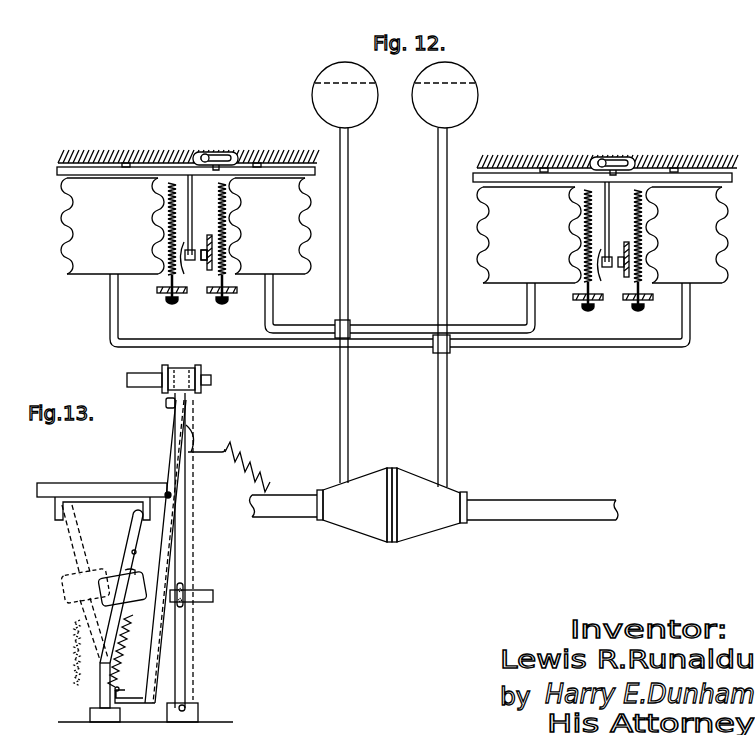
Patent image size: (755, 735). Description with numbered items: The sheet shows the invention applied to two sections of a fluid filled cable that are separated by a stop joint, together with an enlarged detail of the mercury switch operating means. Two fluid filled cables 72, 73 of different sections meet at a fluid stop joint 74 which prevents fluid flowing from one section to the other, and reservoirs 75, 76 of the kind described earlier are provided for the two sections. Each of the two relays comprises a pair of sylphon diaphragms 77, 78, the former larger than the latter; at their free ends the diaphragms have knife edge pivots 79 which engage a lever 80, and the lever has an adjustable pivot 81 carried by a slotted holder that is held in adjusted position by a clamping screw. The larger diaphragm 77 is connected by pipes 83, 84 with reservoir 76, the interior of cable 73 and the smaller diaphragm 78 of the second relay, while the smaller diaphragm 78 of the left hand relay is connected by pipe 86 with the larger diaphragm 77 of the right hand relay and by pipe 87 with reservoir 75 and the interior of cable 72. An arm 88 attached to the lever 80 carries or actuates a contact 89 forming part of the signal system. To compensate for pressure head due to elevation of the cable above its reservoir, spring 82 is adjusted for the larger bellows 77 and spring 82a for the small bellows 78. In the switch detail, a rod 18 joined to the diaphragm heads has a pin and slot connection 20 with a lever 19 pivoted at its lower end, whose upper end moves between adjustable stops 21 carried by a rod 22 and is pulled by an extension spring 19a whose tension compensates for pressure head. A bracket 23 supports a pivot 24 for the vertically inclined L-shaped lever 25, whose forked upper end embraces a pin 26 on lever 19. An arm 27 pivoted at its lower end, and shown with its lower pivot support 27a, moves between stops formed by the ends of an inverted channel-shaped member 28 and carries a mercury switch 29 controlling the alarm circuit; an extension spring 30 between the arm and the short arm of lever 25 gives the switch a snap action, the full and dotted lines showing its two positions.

In FIG. 12, the fluid filled cable 72 is at (298, 520).
In FIG. 12, the fluid filled cable 73 is at (530, 502).
In FIG. 12, the fluid stop joint 74 is at (415, 535).
In FIG. 12, the reservoir 75 is at (324, 76).
In FIG. 12, the reservoir 76 is at (469, 78).
In FIG. 12, the sylphon diaphragm 77 is at (321, 230).
In FIG. 12, the sylphon diaphragm 78 is at (478, 230).
In FIG. 12, the knife edge pivots 79 is at (98, 167).
In FIG. 12, the lever 80 is at (172, 184).
In FIG. 12, the adjustable pivot 81 is at (235, 164).
In FIG. 12, the spring 82 is at (157, 288).
In FIG. 12, the spring 82a is at (222, 287).
In FIG. 12, the pipe 83 is at (638, 347).
In FIG. 12, the pipe 84 is at (438, 408).
In FIG. 12, the pipe 86 is at (298, 325).
In FIG. 12, the pipe 87 is at (348, 292).
In FIG. 12, the arm 88 is at (190, 190).
In FIG. 12, the contact 89 is at (204, 251).
In FIG. 13, the rod 18 is at (203, 590).
In FIG. 13, the lever 19 is at (187, 684).
In FIG. 13, the extension spring 19a is at (255, 448).
In FIG. 13, the pin and slot connection 20 is at (183, 603).
In FIG. 13, the adjustable stops 21 is at (170, 370).
In FIG. 13, the rod 22 is at (149, 373).
In FIG. 13, the bracket 23 is at (98, 483).
In FIG. 13, the pivot 24 is at (165, 493).
In FIG. 13, the L-shaped lever 25 is at (152, 645).
In FIG. 13, the pin 26 is at (165, 407).
In FIG. 13, the arm 27 is at (131, 540).
In FIG. 13, the post 27a is at (98, 665).
In FIG. 13, the inverted channel-shaped member 28 is at (80, 507).
In FIG. 13, the mercury switch 29 is at (110, 572).
In FIG. 13, the extension spring 30 is at (128, 640).